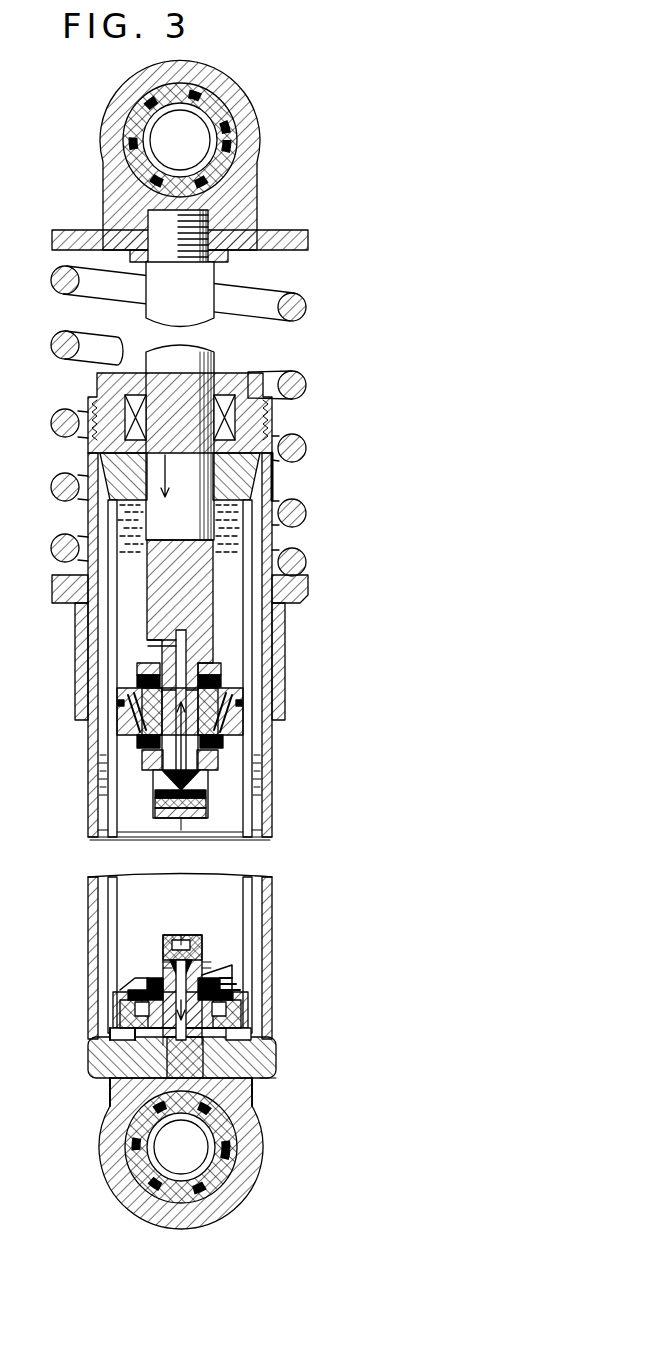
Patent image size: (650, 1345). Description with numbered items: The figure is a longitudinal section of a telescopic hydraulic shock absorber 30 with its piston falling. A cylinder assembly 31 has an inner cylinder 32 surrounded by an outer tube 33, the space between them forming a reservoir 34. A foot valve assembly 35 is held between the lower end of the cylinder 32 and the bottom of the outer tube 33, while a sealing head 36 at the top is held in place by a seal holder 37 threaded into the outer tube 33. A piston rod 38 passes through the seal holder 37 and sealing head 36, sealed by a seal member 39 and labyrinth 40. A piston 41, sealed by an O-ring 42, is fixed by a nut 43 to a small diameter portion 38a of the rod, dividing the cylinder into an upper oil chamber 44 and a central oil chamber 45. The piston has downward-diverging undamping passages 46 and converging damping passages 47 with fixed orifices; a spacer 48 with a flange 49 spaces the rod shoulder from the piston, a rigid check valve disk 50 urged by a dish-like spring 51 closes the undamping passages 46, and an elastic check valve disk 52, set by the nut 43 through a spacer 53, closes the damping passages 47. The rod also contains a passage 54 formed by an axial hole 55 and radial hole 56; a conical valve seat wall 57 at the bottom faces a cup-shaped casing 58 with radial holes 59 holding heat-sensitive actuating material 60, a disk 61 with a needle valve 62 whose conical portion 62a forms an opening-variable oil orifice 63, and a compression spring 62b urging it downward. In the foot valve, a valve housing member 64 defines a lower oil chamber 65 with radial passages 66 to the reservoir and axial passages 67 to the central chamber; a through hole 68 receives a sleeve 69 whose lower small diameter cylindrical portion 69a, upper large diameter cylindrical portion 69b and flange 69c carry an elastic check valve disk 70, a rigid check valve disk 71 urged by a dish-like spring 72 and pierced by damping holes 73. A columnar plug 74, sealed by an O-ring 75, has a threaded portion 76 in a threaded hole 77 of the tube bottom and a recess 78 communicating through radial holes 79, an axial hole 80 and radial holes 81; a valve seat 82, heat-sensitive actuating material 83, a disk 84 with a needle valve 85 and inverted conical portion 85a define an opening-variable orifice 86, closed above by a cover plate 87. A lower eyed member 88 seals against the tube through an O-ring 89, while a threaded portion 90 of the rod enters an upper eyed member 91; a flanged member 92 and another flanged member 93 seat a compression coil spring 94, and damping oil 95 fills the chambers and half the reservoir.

The telescopic type hydraulic shock absorber 30 is at (337, 519).
The cylinder assembly 31 is at (316, 608).
The inner cylinder 32 is at (100, 623).
The outer tube 33 is at (273, 490).
The reservoir 34 is at (112, 692).
The foot valve assembly 35 is at (273, 922).
The sealing head 36 is at (280, 470).
The seal holder 37 is at (273, 412).
The piston rod 38 is at (216, 352).
The small diameter portion 38a is at (160, 780).
The seal member 39 is at (108, 392).
The labyrinth 40 is at (125, 468).
The piston 41 is at (243, 705).
The O-ring 42 is at (218, 695).
The nut 43 is at (153, 792).
The upper oil chamber 44 is at (240, 545).
The central oil chamber 45 is at (120, 840).
The undamping passages 46 is at (242, 725).
The damping passages 47 is at (125, 712).
The spacer 48 is at (210, 665).
The flange 49 is at (222, 680).
The rigid check valve disk 50 is at (140, 666).
The dish-like spring 51 is at (138, 680).
The elastic check valve disk 52 is at (138, 742).
The spacer 53 is at (145, 762).
The passage 54 is at (180, 615).
The axial hole 55 is at (183, 640).
The radial hole 56 is at (150, 645).
The conical valve seat wall 57 is at (166, 800).
The cup-shaped casing 58 is at (210, 808).
The radial holes 59 is at (208, 793).
The heat-sensitive actuating material 60 is at (200, 812).
The disk 61 is at (183, 830).
The needle valve 62 is at (168, 835).
The conical portion 62a is at (112, 832).
The compression spring 62b is at (220, 770).
The opening-variable oil orifice 63 is at (224, 752).
The valve housing member 64 is at (248, 1012).
The lower oil chamber 65 is at (250, 1034).
The radial passages 66 is at (240, 1030).
The axial passages 67 is at (95, 1062).
The through hole 68 is at (140, 1032).
The sleeve 69 is at (205, 975).
The lower small diameter cylindrical portion 69a is at (245, 990).
The upper large diameter cylindrical portion 69b is at (240, 980).
The flange 69c is at (238, 965).
The elastic check valve disk 70 is at (125, 1040).
The rigid check valve disk 71 is at (120, 1022).
The dish-like spring 72 is at (130, 995).
The damping holes 73 is at (135, 1008).
The columnar plug 74 is at (210, 926).
The O-ring 75 is at (160, 1044).
The threaded portion 76 is at (210, 1045).
The threaded hole 77 is at (268, 1074).
The recess 78 is at (172, 970).
The radial holes 79 is at (194, 960).
The axial hole 80 is at (183, 1050).
The radial holes 81 is at (112, 1092).
The valve seat 82 is at (148, 984).
The heat-sensitive actuating material 83 is at (204, 960).
The disk 84 is at (165, 962).
The needle valve 85 is at (176, 945).
The inverted conical portion 85a is at (180, 940).
The opening-variable orifice 86 is at (125, 985).
The cover plate 87 is at (184, 934).
The lower eyed member 88 is at (262, 1170).
The O-ring 89 is at (255, 1100).
The threaded portion 90 is at (160, 215).
The upper eyed member 91 is at (258, 124).
The flanged member 92 is at (282, 237).
The flanged member 93 is at (304, 575).
The compression coil spring 94 is at (290, 372).
The damping oil 95 is at (104, 525).